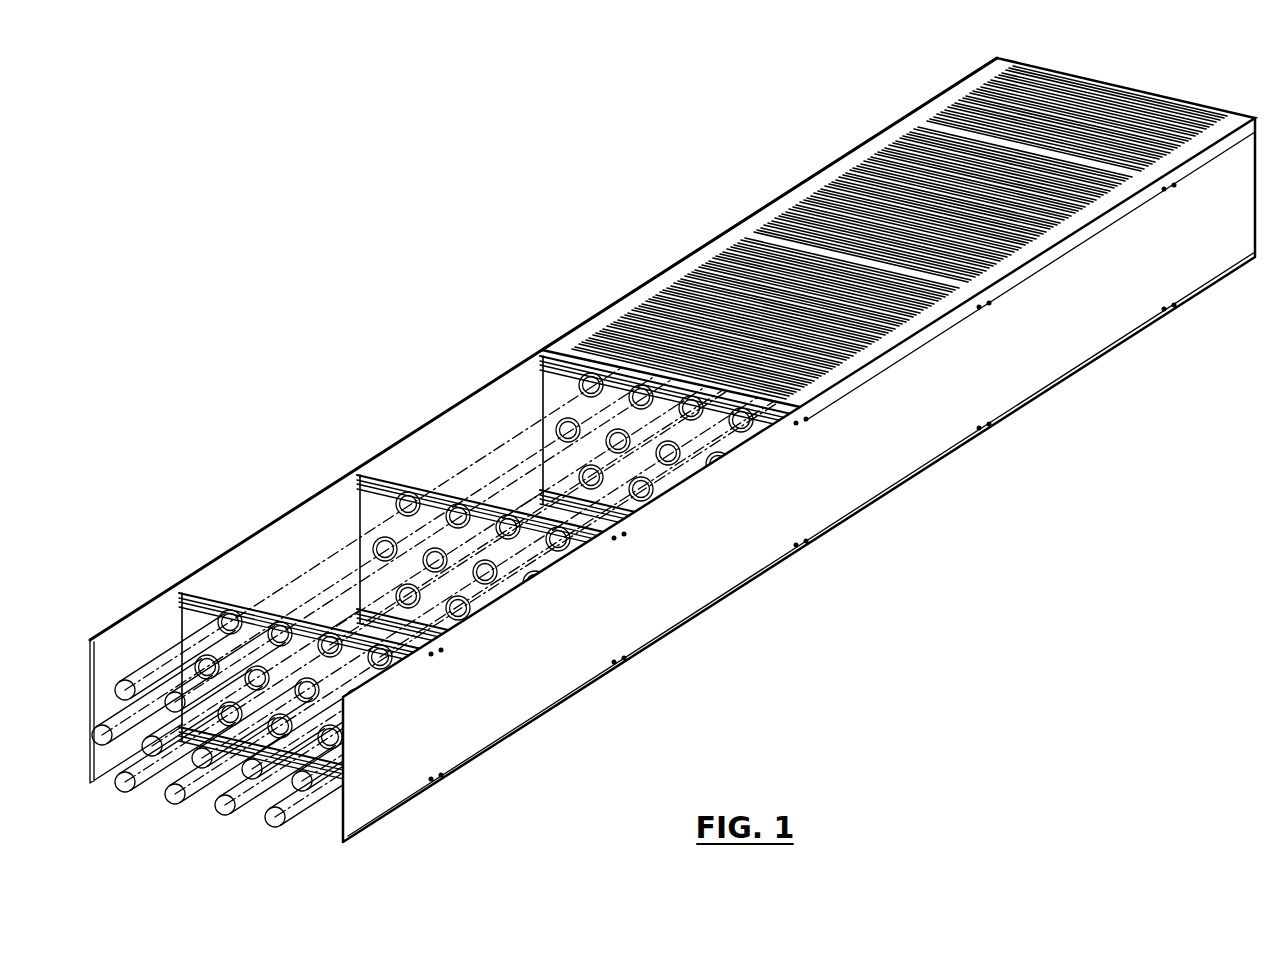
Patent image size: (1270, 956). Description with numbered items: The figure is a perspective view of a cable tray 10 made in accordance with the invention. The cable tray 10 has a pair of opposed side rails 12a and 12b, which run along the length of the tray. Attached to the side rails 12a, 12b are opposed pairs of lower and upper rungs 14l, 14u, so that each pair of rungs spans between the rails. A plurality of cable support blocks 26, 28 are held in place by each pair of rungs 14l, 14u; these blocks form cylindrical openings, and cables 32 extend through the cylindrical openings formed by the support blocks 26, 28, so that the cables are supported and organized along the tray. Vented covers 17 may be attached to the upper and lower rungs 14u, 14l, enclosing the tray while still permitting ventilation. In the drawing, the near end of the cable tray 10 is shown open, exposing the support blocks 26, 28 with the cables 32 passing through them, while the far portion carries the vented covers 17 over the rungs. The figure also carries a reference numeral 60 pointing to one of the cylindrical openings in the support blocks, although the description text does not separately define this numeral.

The cable tray 10 is at (672, 464).
The side rail 12a is at (458, 745).
The side rail 12b is at (228, 550).
The upper rung 14u is at (230, 596).
The lower rung 14l is at (272, 765).
The vented cover 17 is at (847, 207).
The cable support block 26 is at (180, 603).
The cable support block 28 is at (186, 633).
The cable 32 is at (150, 780).
The tube opening 60 is at (388, 518).